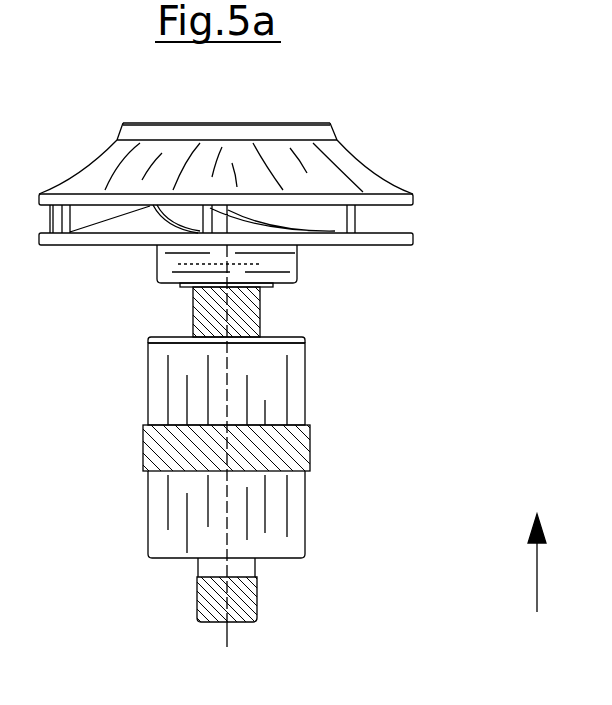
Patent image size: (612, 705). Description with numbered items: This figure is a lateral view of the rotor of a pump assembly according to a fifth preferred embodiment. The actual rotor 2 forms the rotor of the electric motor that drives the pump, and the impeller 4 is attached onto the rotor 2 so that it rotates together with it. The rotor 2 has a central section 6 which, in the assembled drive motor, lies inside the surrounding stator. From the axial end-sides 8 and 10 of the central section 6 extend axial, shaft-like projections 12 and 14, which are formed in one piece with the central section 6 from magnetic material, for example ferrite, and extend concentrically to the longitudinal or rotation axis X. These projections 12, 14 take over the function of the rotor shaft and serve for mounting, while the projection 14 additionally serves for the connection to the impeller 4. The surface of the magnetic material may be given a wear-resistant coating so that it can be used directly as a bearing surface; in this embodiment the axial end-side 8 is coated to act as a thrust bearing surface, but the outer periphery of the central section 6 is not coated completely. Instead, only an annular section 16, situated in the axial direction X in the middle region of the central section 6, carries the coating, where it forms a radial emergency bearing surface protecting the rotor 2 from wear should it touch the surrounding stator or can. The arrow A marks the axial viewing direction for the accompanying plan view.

The rotor 2 is at (256, 457).
The impeller 4 is at (380, 170).
The central section 6 is at (290, 393).
The axial end-side 8 is at (280, 560).
The axial end-side 10 is at (290, 335).
The axial shaft-like projection 12 is at (197, 608).
The axial shaft-like projection 14 is at (193, 315).
The annular section 16 is at (157, 462).
The longitudinal axis or rotation axis X is at (228, 638).
The arrow A is at (547, 563).